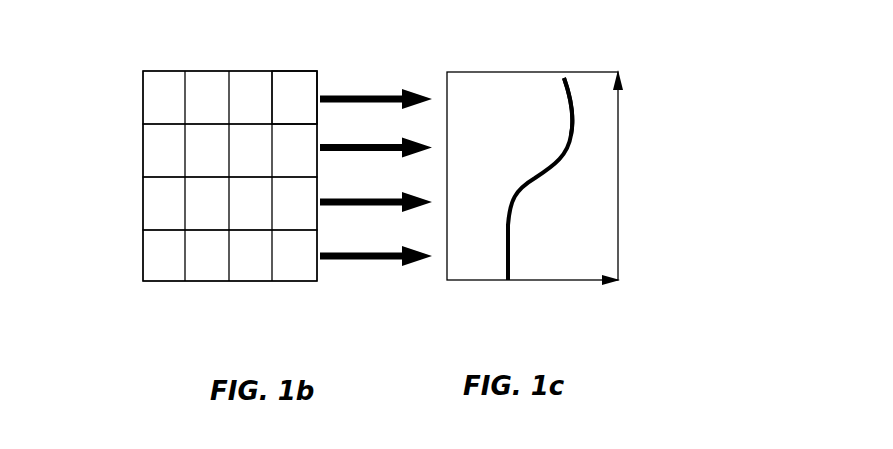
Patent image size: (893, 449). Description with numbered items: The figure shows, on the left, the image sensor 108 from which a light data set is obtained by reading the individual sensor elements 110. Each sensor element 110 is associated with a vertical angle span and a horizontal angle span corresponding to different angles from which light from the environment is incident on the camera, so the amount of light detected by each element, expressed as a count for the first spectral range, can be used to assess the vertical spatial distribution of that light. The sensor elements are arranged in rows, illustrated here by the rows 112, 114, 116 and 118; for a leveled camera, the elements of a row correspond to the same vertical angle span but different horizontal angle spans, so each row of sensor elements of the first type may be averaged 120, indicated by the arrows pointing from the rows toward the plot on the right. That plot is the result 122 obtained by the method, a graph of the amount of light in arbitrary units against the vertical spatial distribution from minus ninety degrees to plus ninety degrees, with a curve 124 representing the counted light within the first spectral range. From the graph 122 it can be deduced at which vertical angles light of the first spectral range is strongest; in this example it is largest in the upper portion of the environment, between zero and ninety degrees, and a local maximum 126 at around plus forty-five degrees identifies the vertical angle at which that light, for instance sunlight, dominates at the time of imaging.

In FIG. 1b, the image sensor 108 is at (175, 71).
In FIG. 1b, the sensor element 110 is at (292, 97).
In FIG. 1b, the row of sensor elements 112 is at (143, 100).
In FIG. 1b, the row of sensor elements 114 is at (143, 153).
In FIG. 1b, the row of sensor elements 116 is at (143, 205).
In FIG. 1b, the row of sensor elements 118 is at (143, 258).
In FIG. 1b, the averaging 120 is at (372, 97).
In FIG. 1c, the result 122 is at (487, 112).
In FIG. 1c, the light distribution curve 124 is at (563, 87).
In FIG. 1c, the local maximum 126 is at (573, 120).